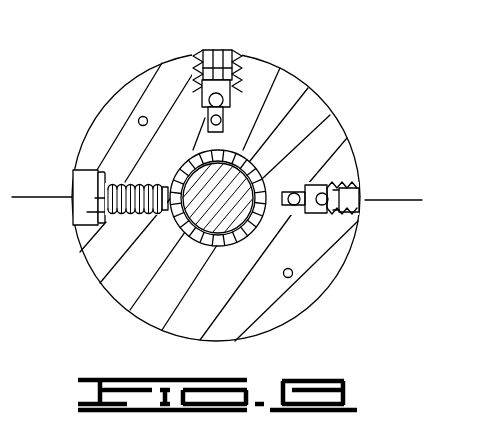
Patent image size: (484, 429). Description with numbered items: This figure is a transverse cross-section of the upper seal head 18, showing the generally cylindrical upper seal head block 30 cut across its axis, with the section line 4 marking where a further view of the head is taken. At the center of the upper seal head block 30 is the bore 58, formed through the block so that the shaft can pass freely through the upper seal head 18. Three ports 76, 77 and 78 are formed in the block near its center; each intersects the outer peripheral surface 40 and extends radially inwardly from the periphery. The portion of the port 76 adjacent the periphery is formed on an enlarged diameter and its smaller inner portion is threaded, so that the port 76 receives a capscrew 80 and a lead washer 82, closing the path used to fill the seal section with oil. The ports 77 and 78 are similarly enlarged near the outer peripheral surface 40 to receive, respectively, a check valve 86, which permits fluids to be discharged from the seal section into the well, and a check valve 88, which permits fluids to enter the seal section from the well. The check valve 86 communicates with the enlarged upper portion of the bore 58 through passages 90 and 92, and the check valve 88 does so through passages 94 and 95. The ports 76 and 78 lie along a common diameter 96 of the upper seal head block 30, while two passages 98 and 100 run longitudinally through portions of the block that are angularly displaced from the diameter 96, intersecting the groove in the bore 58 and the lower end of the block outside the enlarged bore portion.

The section line 4- 4 is at (97, 73).
The upper seal head 18 is at (304, 64).
The upper seal head block 30 is at (312, 102).
The outer peripheral surface 40 is at (232, 70).
The bore 58 is at (198, 229).
The port 76 is at (101, 223).
The port 77 is at (202, 52).
The port 78 is at (345, 202).
The capscrew 80 is at (83, 185).
The lead washer 82 is at (102, 232).
The check valve 86 is at (222, 50).
The check valve 88 is at (370, 214).
The passage 90 is at (228, 101).
The passage 92 is at (226, 121).
The passage 94 is at (302, 213).
The passage 95 is at (298, 192).
The diameter 96 is at (45, 197).
The passage 98 is at (139, 120).
The passage 100 is at (289, 278).